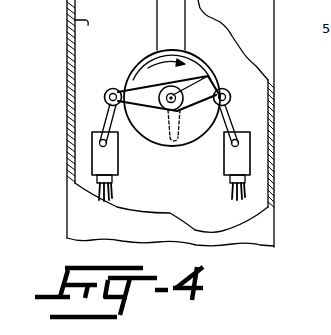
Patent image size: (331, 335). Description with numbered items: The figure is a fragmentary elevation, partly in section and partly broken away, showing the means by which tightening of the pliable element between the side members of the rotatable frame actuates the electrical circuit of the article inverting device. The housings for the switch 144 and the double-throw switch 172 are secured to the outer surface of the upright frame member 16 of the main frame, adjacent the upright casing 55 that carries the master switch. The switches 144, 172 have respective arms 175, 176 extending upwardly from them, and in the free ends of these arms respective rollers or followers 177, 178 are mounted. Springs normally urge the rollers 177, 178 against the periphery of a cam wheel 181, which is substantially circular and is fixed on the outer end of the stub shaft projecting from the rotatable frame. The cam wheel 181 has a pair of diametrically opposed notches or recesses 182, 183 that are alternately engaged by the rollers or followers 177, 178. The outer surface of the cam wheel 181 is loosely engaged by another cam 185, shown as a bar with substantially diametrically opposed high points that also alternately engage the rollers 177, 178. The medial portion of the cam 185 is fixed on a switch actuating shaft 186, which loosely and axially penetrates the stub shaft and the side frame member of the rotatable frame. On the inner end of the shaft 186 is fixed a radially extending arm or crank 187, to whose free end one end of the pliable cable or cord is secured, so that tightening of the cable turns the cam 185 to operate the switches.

The upright frame member 16 is at (67, 22).
The upright casing 55 is at (262, 20).
The switch 144 is at (223, 164).
The double-throw switch 172 is at (118, 162).
The arm 175 is at (233, 127).
The arm 176 is at (105, 123).
The roller or follower 177 is at (231, 93).
The roller or follower 178 is at (104, 92).
The cam wheel 181 is at (147, 59).
The notch or recess 182 is at (188, 133).
The notch or recess 183 is at (133, 71).
The cam 185 is at (208, 75).
The switch actuating shaft 186 is at (197, 63).
The arm or crank 187 is at (171, 141).